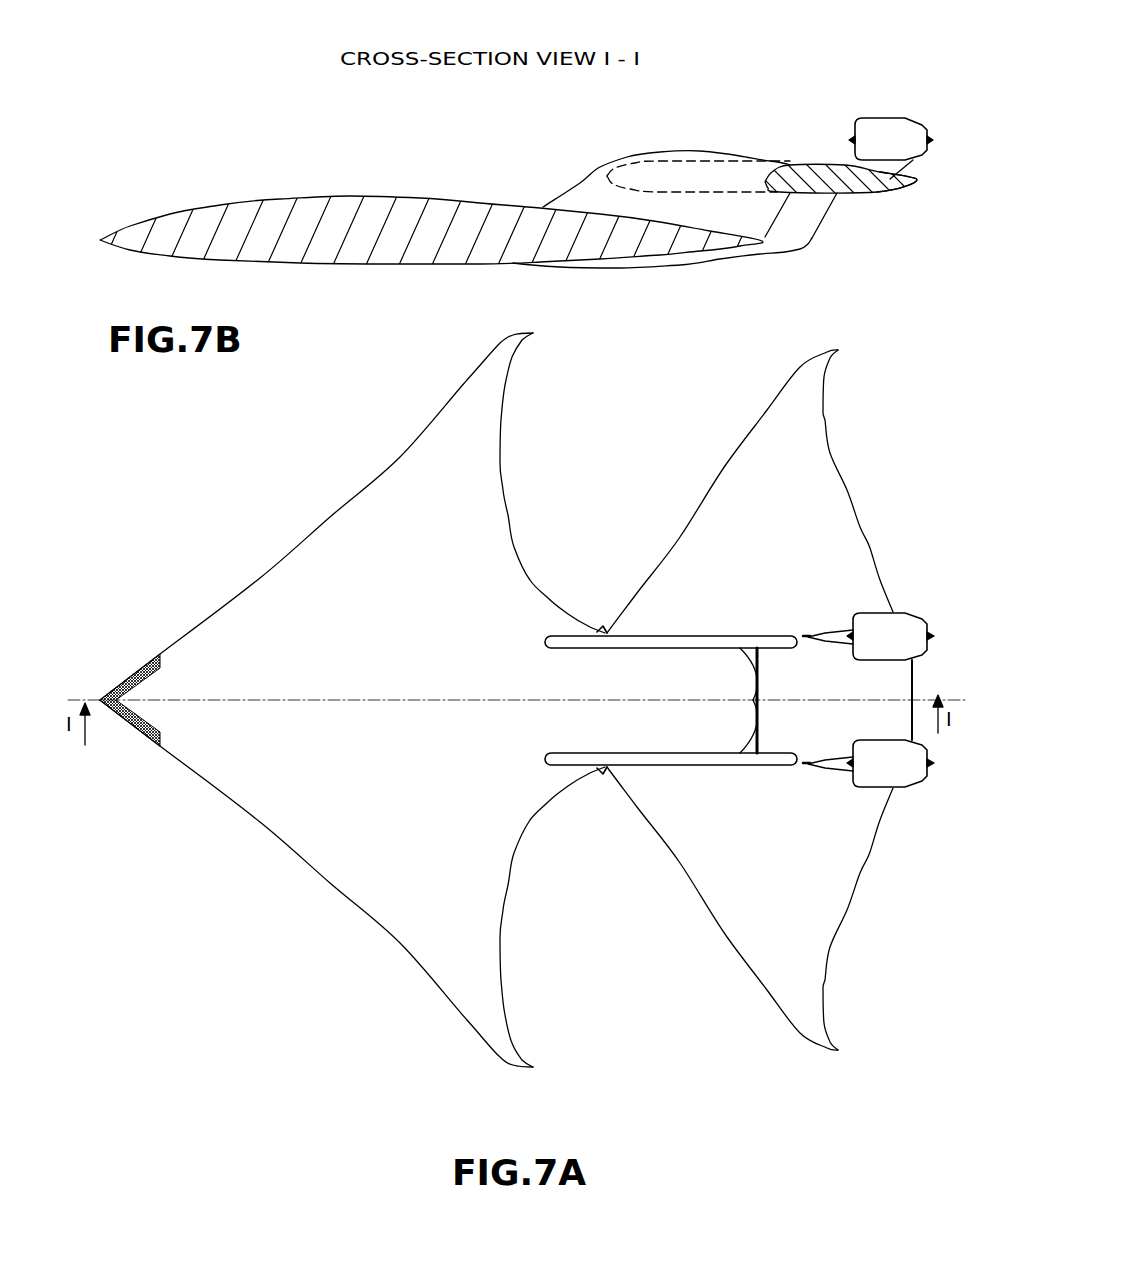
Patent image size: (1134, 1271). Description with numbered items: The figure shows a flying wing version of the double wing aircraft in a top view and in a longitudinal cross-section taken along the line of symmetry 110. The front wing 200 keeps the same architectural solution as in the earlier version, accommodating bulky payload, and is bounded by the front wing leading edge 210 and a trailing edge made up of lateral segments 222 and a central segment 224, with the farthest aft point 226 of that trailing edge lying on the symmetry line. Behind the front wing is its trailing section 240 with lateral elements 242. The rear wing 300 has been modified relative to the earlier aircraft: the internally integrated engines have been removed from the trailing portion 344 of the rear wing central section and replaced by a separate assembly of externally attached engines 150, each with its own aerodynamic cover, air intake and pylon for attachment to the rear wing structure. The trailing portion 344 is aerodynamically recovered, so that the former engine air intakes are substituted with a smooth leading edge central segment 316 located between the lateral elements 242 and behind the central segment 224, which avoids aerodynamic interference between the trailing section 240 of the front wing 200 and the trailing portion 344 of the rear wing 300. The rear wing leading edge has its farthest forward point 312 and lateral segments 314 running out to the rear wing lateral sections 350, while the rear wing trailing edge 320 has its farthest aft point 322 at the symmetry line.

In FIG. 7A, the line of symmetry 110 is at (70, 700).
In FIG. 7B, the externally attached engines 150 is at (883, 132).
In FIG. 7A, the externally attached engines 150 is at (899, 608).
In FIG. 7B, the front wing 200 is at (429, 245).
In FIG. 7A, the front wing 200 is at (353, 700).
In FIG. 7A, the front wing leading edge 210 is at (207, 780).
In FIG. 7A, the front wing trailing edge lateral segments 222 is at (501, 925).
In FIG. 7A, the front wing trailing edge central segment 224 is at (748, 678).
In FIG. 7B, the front wing trailing edge farthest aft point 226 is at (767, 243).
In FIG. 7A, the front wing trailing edge farthest aft point 226 is at (748, 702).
In FIG. 7B, the front wing trailing section 240 is at (653, 237).
In FIG. 7A, the front wing trailing section 240 is at (657, 660).
In FIG. 7B, the front wing trailing section lateral elements 242 is at (580, 193).
In FIG. 7A, the front wing trailing section lateral elements 242 is at (671, 652).
In FIG. 7B, the rear wing 300 is at (681, 160).
In FIG. 7A, the rear wing 300 is at (765, 700).
In FIG. 7B, the rear wing leading edge farthest forward point 312 is at (607, 172).
In FIG. 7A, the rear wing leading edge farthest forward point 312 is at (590, 627).
In FIG. 7A, the rear wing leading edge lateral segments 314 is at (722, 700).
In FIG. 7B, the rear wing leading edge central segment 316 is at (845, 197).
In FIG. 7A, the rear wing leading edge central segment 316 is at (754, 700).
In FIG. 7A, the rear wing trailing edge 320 is at (848, 492).
In FIG. 7B, the rear wing trailing edge farthest aft point 322 is at (920, 182).
In FIG. 7A, the rear wing trailing edge farthest aft point 322 is at (917, 695).
In FIG. 7B, the rear wing central section trailing portion 344 is at (857, 187).
In FIG. 7A, the rear wing central section trailing portion 344 is at (867, 717).
In FIG. 7A, the rear wing lateral sections 350 is at (720, 533).